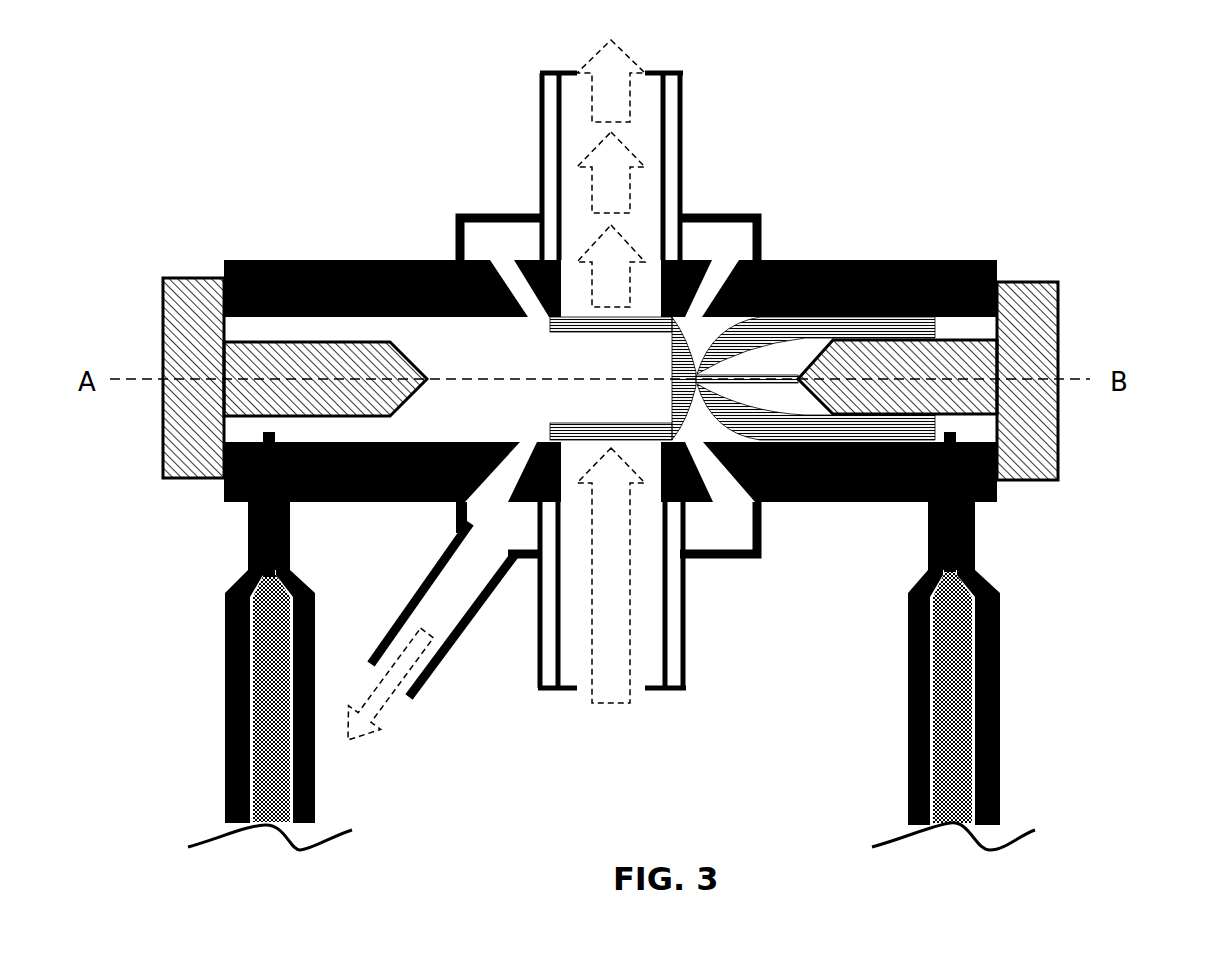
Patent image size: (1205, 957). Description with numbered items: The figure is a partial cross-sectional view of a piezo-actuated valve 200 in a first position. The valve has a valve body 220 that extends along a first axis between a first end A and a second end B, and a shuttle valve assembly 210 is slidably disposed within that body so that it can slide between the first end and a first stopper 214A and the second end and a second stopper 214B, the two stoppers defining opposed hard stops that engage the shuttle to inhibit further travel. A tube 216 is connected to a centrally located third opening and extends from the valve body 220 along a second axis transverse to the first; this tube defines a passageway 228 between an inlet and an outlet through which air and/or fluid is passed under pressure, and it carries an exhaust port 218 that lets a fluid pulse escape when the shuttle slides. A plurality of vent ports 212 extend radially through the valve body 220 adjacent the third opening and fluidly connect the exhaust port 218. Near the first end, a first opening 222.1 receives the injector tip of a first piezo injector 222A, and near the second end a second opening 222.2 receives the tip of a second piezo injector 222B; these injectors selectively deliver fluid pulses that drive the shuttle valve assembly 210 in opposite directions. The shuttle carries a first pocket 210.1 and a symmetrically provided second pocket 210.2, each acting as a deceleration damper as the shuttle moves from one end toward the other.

The piezo-actuated valve 200 is at (370, 168).
The shuttle valve assembly 210 is at (572, 428).
The first pocket 210.1 is at (663, 379).
The second pocket 210.2 is at (803, 355).
The vent ports 212 is at (733, 518).
The first stopper 214A is at (200, 340).
The second stopper 214B is at (1028, 312).
The tube 216 is at (540, 140).
The exhaust port 218 is at (428, 580).
The valve body 220 is at (287, 262).
The first opening 222.1 is at (270, 431).
The second opening 222.2 is at (947, 432).
The first piezo injector 222A is at (223, 593).
The second piezo injector 222B is at (997, 587).
The passageway 228 is at (612, 570).